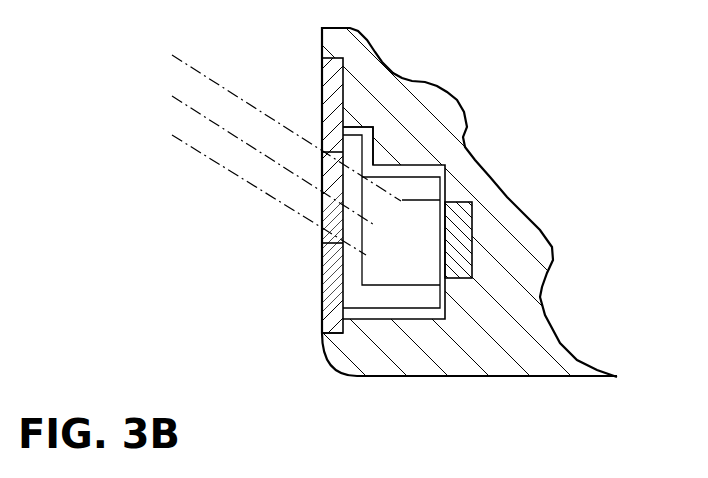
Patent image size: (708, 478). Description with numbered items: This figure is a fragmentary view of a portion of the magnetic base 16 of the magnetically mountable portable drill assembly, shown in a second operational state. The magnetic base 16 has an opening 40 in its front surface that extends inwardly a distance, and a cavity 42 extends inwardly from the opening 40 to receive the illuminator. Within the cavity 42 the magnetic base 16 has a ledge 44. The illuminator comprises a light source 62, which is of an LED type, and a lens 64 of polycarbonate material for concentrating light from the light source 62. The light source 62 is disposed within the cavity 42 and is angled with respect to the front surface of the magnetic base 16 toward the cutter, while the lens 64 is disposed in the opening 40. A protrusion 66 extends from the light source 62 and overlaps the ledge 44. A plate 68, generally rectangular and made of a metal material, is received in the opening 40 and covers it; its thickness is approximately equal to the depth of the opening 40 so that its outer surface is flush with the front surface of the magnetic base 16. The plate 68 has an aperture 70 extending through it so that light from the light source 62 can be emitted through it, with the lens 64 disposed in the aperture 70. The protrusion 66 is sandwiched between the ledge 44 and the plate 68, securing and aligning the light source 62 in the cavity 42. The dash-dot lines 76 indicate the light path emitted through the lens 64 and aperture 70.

The magnetic base 16 is at (558, 377).
The opening 40 is at (330, 333).
The cavity 42 is at (425, 313).
The ledge 44 is at (378, 162).
The light source 62 is at (381, 276).
The lens 64 is at (333, 178).
The protrusion 66 is at (355, 150).
The plate 68 is at (330, 90).
The aperture 70 is at (323, 237).
The light beam 76 is at (222, 128).